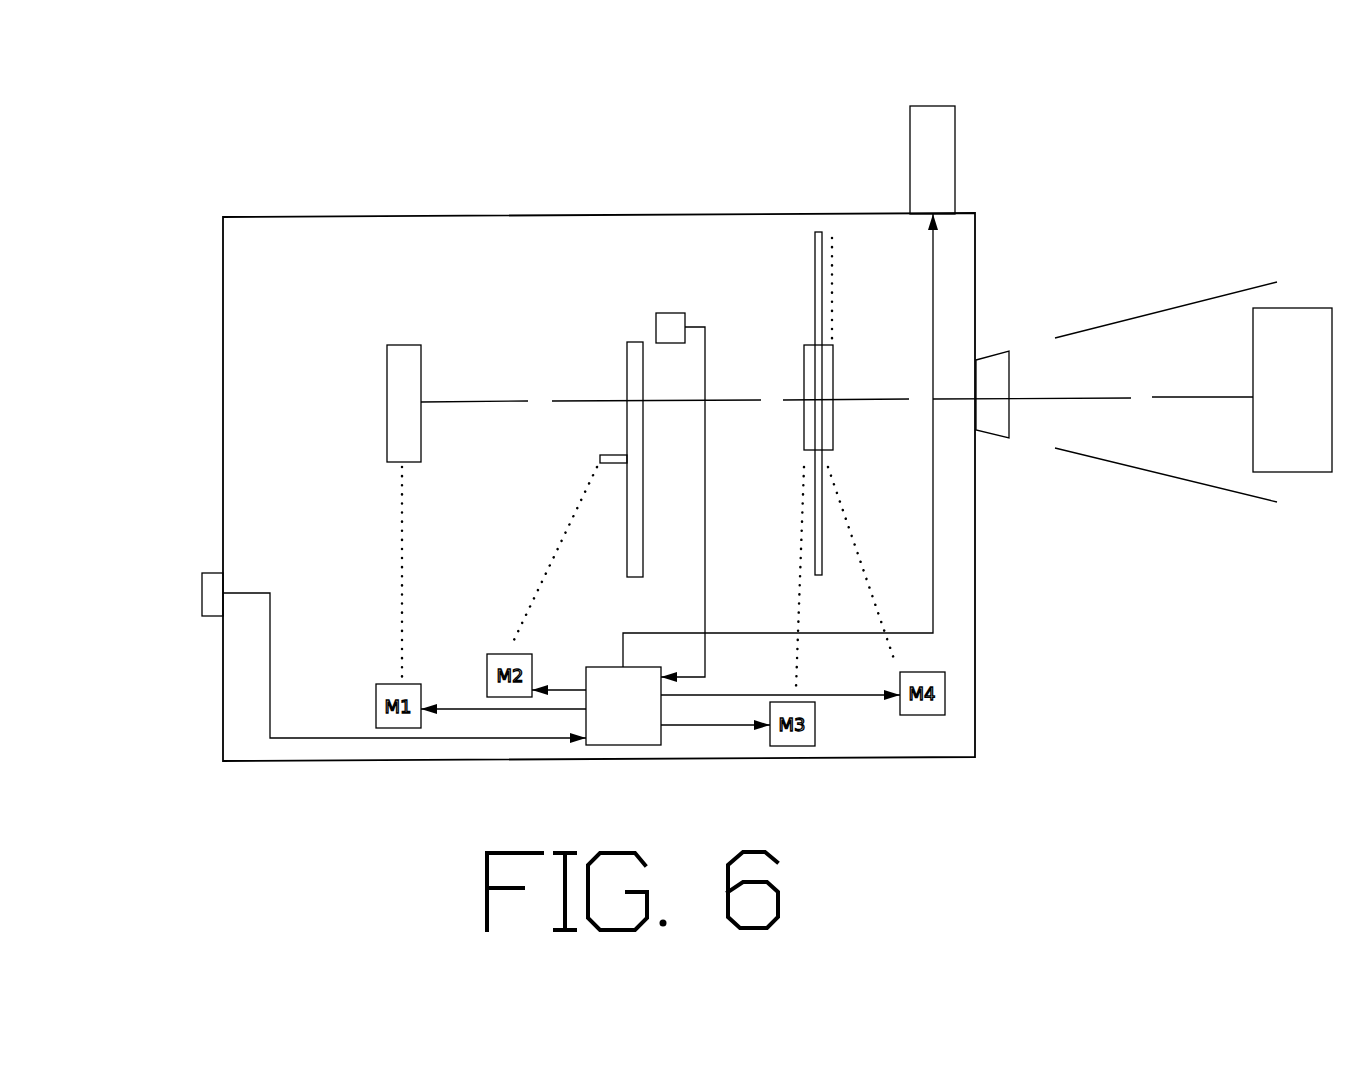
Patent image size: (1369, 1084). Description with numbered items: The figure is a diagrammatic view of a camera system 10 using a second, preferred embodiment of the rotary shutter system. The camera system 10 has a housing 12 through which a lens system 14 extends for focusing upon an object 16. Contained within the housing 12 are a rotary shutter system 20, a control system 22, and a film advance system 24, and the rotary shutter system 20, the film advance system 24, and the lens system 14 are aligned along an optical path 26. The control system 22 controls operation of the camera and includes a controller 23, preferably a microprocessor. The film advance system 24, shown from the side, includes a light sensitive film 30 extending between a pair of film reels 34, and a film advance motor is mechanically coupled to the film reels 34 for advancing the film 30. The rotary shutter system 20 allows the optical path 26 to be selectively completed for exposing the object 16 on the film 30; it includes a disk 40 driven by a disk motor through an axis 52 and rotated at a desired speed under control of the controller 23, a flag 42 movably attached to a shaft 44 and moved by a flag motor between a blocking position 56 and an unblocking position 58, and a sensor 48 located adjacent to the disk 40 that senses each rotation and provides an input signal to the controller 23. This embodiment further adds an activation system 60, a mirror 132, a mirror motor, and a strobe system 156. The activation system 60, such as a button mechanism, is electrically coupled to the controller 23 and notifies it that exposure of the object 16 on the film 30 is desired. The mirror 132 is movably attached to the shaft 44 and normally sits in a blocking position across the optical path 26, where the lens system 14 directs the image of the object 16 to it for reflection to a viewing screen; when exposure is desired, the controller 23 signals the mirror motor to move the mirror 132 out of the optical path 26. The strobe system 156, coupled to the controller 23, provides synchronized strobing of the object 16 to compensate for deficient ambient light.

The camera system 10 is at (345, 162).
The housing 12 is at (552, 214).
The lens system 14 is at (1007, 335).
The object 16 is at (1308, 472).
The rotary shutter system 20 is at (595, 300).
The control system 22 is at (518, 778).
The controller 23 is at (628, 712).
The film advance system 24 is at (352, 320).
The optical path 26 is at (552, 401).
The light sensitive film 30 is at (421, 427).
The film reels 34 is at (403, 411).
The disk 40 is at (627, 560).
The flag 42 is at (803, 345).
The shaft 44 is at (815, 243).
The sensor 48 is at (668, 313).
The axis 52 is at (600, 458).
The blocking position 56 is at (793, 382).
The unblocking position 58 is at (783, 505).
The activation system 60 is at (202, 592).
The mirror 132 is at (835, 362).
The strobe system 156 is at (910, 148).